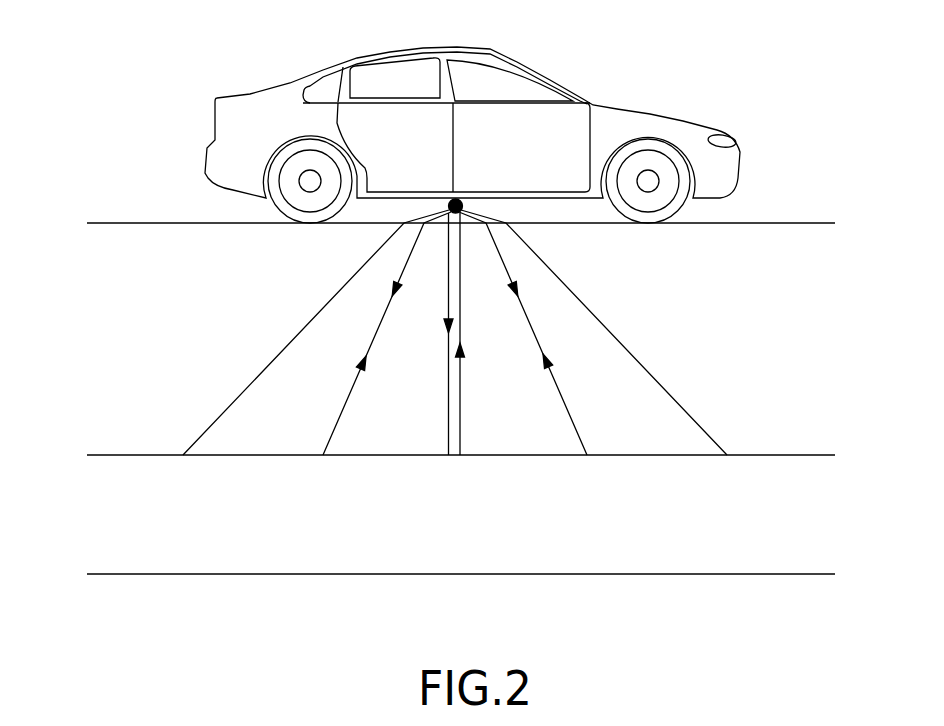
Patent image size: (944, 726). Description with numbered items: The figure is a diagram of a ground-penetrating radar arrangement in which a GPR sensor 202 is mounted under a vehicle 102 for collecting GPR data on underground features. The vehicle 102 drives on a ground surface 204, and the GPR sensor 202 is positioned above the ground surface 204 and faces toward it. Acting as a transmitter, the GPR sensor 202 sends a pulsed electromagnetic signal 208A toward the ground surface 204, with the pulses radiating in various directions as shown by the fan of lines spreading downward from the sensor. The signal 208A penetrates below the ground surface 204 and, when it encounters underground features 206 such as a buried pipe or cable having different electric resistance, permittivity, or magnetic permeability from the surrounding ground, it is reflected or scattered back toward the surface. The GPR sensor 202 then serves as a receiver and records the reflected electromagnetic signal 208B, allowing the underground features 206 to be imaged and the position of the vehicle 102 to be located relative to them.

The vehicle 102 is at (575, 87).
The GPR sensor 202 is at (458, 200).
The ground surface 204 is at (115, 223).
The underground features 206 is at (367, 455).
The pulsed electromagnetic signal 208A is at (448, 300).
The reflected electromagnetic signal 208B is at (462, 375).